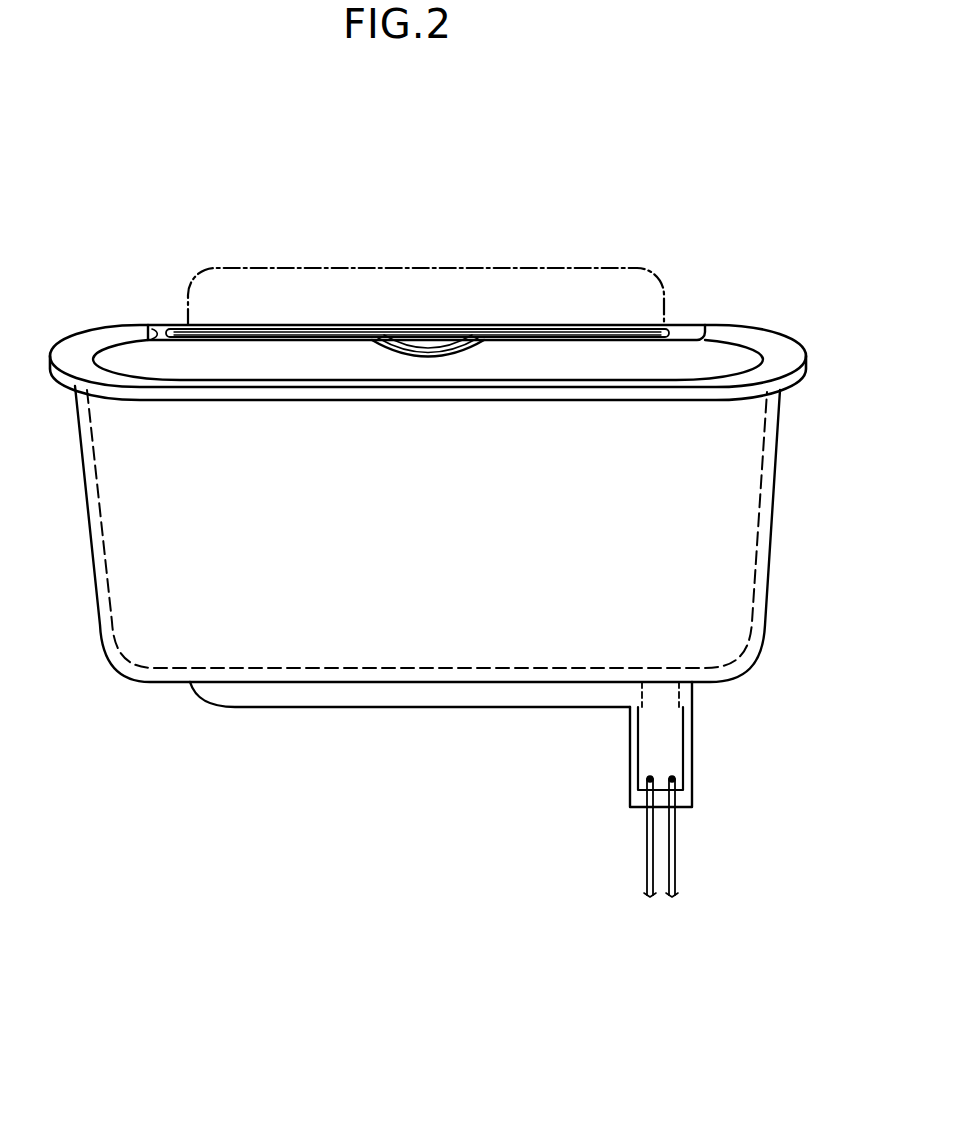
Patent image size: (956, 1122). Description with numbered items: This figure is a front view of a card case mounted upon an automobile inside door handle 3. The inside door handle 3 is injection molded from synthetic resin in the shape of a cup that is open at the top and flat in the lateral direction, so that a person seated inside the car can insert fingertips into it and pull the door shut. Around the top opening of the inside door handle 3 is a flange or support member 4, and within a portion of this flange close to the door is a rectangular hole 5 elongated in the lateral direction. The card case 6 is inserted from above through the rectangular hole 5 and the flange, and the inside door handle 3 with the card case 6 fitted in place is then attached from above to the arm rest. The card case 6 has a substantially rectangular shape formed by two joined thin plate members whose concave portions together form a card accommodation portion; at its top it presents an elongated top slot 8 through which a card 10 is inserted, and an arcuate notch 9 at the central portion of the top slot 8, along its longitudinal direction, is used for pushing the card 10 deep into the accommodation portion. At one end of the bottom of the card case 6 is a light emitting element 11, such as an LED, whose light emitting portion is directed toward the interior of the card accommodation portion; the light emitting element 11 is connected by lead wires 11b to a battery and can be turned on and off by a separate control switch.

The inside door handle 3 is at (442, 517).
The flange or support member 4 is at (744, 326).
The rectangular hole 5 is at (151, 325).
The card case 6 is at (452, 708).
The top slot 8 is at (660, 330).
The arcuate notch 9 is at (402, 340).
The card 10 is at (633, 268).
The light emitting element 11 is at (678, 695).
The lead wires 11b is at (676, 898).